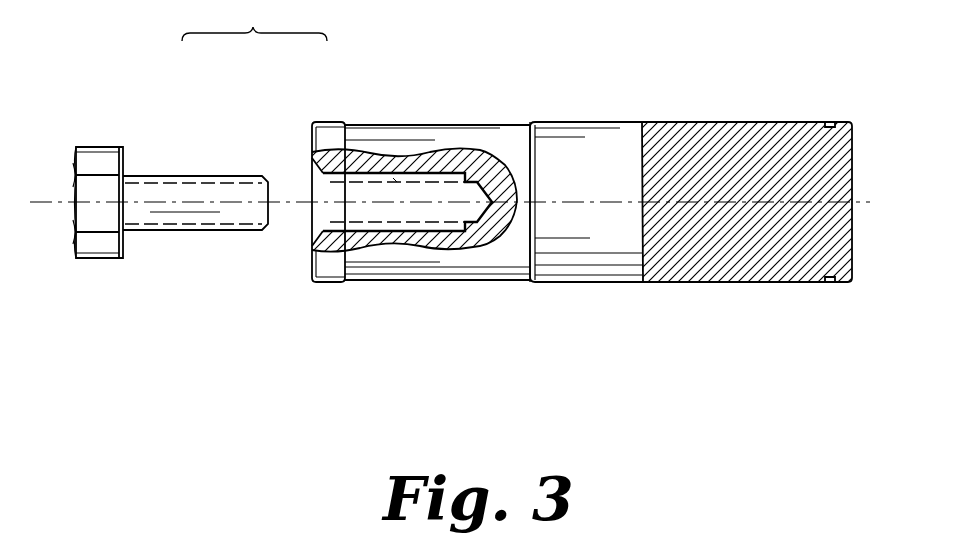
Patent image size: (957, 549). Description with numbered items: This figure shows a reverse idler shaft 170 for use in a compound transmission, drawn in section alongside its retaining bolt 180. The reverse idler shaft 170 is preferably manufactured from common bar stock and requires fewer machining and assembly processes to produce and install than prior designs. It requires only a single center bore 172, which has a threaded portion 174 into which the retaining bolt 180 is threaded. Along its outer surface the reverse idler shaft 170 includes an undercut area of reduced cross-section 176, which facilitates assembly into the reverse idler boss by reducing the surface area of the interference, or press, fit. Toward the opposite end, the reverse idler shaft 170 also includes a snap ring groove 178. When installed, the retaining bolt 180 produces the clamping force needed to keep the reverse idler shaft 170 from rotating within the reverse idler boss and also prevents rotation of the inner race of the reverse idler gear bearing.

The reverse idler shaft 170 is at (378, 300).
The center bore 172 is at (300, 171).
The threaded portion 174 is at (392, 181).
The undercut area of reduced cross-section 176 is at (461, 119).
The snap ring groove 178 is at (831, 286).
The retaining bolt 180 is at (110, 269).